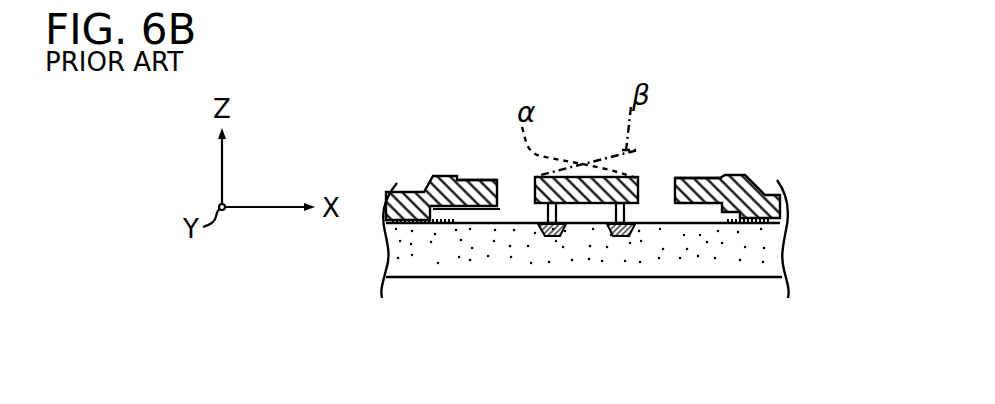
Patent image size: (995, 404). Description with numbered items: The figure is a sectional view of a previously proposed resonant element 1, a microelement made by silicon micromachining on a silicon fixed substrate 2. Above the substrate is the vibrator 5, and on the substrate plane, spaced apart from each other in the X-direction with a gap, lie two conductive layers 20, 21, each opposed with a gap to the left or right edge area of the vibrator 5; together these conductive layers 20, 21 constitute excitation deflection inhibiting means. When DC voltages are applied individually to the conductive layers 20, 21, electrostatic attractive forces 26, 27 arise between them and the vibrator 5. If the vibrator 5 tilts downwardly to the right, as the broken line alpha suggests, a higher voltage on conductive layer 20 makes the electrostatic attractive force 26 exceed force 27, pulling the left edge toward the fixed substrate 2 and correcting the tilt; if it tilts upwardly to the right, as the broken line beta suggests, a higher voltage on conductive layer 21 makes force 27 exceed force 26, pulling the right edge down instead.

The resonant element 1 is at (707, 87).
The fixed substrate 2 is at (666, 278).
The vibrator 5 is at (640, 198).
The conductive layer 20 is at (529, 229).
The conductive layer 21 is at (628, 236).
The electrostatic attractive force 26 is at (551, 210).
The electrostatic attractive force 27 is at (624, 210).